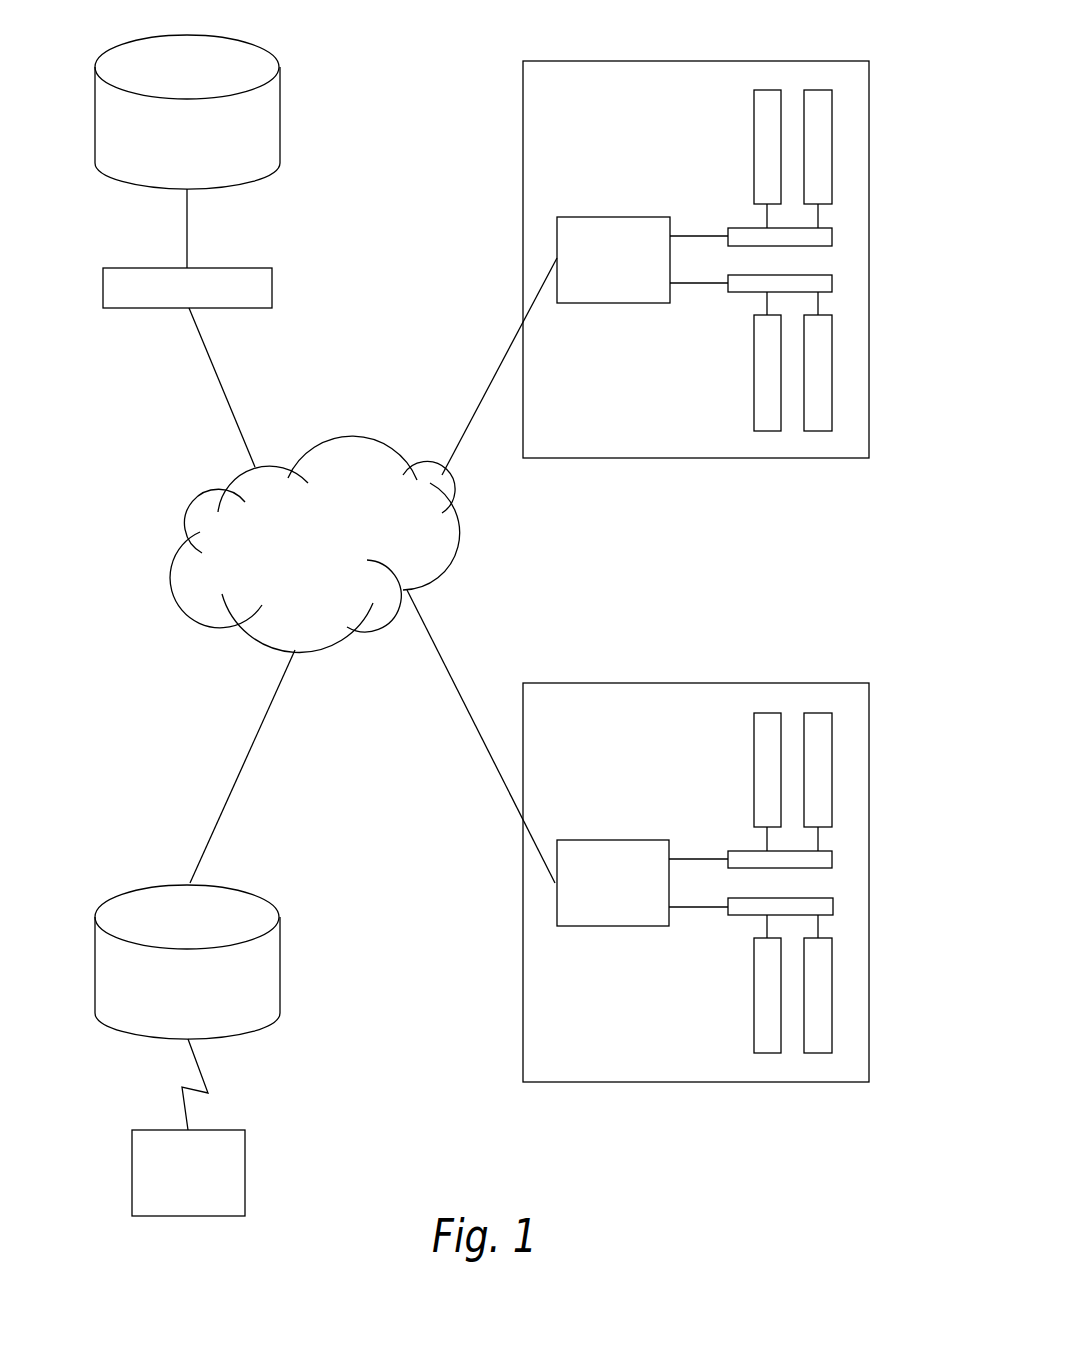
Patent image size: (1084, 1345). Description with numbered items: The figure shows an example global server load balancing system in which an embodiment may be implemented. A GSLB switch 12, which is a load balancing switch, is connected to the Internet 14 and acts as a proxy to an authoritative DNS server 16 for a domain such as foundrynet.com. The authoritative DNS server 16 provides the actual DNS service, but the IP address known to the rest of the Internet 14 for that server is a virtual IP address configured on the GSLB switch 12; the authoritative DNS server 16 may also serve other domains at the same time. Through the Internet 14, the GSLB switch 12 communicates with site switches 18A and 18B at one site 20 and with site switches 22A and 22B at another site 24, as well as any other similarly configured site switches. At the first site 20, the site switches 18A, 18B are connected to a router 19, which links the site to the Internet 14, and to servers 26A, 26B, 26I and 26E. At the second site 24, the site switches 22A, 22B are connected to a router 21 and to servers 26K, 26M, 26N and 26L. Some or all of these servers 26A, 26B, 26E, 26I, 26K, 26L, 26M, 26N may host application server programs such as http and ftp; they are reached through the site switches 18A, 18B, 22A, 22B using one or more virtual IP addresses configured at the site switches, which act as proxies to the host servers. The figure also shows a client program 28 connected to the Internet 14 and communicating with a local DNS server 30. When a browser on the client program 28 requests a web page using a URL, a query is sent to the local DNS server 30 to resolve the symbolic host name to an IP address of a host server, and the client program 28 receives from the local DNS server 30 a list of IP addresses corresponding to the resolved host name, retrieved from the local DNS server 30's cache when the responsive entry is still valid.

The GSLB switch 12 is at (260, 275).
The Internet 14 is at (345, 453).
The authoritative DNS server 16 is at (260, 68).
The site switch 18A is at (832, 237).
The site switch 18B is at (832, 287).
The router 19 is at (563, 243).
The site 20 is at (568, 75).
The router 21 is at (563, 900).
The site switch 22A is at (832, 860).
The site switch 22B is at (833, 907).
The site 24 is at (568, 698).
The server 26A is at (772, 90).
The server 26B is at (822, 90).
The server 26E is at (818, 431).
The server 26I is at (768, 431).
The server 26K is at (772, 713).
The server 26L is at (818, 1053).
The server 26M is at (822, 713).
The server 26N is at (770, 1053).
The client program 28 is at (228, 1187).
The local DNS server 30 is at (253, 915).